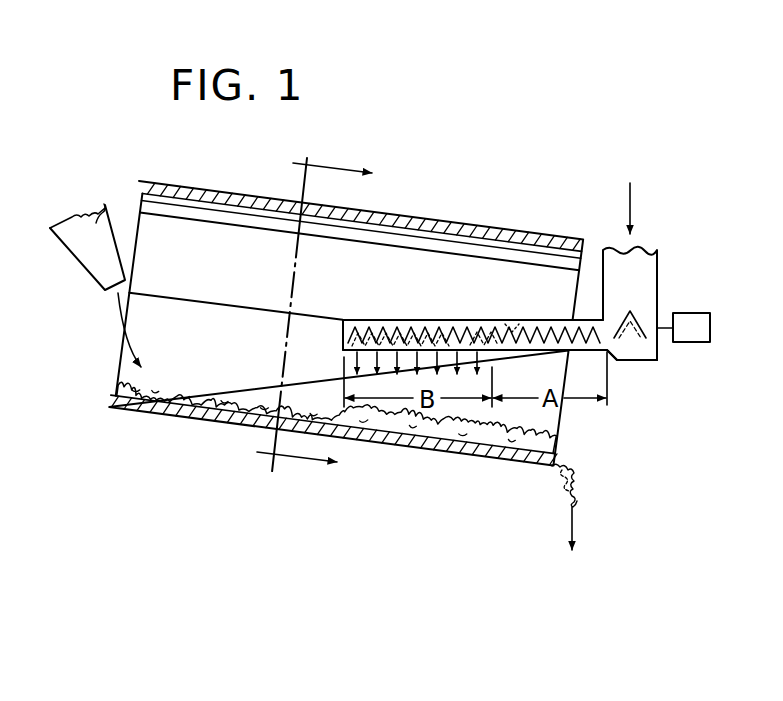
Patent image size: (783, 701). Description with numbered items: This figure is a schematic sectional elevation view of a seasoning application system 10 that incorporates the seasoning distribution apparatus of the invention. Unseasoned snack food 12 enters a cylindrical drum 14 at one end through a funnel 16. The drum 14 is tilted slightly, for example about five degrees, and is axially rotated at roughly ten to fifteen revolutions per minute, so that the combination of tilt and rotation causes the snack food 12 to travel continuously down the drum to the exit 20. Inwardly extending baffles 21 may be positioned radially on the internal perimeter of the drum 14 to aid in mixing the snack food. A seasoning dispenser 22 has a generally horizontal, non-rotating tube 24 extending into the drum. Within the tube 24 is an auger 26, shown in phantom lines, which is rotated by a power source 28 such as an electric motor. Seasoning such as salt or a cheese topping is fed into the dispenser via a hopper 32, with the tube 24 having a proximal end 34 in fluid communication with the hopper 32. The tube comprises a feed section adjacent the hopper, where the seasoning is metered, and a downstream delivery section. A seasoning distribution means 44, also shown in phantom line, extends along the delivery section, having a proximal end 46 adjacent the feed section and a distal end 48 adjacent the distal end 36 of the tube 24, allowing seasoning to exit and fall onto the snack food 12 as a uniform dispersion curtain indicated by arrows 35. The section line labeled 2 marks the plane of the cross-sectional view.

The seasoning application system 10 is at (533, 204).
The snack food 12 is at (226, 392).
The cylindrical drum 14 is at (219, 191).
The funnel 16 is at (108, 186).
The exit 20 is at (574, 478).
The baffles 21 is at (263, 232).
The seasoning dispenser 22 is at (673, 289).
The tube portion 24 is at (556, 318).
The auger 26 is at (510, 319).
The power source 28 is at (711, 329).
The hopper 32 is at (634, 362).
The proximal end 34 is at (605, 322).
The arrows 35 is at (481, 358).
The distal end of tube 36 is at (343, 350).
The seasoning distribution means 44 is at (431, 317).
The proximal end of seasoning distribution means 46 is at (487, 326).
The distal end of seasoning distribution means 48 is at (370, 326).
The section line 2- 2 is at (327, 319).